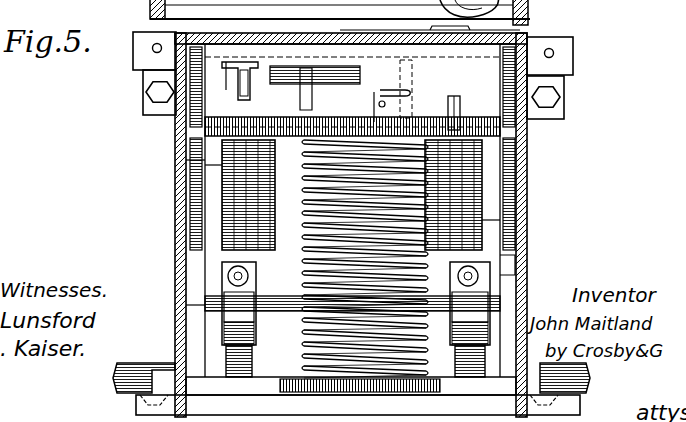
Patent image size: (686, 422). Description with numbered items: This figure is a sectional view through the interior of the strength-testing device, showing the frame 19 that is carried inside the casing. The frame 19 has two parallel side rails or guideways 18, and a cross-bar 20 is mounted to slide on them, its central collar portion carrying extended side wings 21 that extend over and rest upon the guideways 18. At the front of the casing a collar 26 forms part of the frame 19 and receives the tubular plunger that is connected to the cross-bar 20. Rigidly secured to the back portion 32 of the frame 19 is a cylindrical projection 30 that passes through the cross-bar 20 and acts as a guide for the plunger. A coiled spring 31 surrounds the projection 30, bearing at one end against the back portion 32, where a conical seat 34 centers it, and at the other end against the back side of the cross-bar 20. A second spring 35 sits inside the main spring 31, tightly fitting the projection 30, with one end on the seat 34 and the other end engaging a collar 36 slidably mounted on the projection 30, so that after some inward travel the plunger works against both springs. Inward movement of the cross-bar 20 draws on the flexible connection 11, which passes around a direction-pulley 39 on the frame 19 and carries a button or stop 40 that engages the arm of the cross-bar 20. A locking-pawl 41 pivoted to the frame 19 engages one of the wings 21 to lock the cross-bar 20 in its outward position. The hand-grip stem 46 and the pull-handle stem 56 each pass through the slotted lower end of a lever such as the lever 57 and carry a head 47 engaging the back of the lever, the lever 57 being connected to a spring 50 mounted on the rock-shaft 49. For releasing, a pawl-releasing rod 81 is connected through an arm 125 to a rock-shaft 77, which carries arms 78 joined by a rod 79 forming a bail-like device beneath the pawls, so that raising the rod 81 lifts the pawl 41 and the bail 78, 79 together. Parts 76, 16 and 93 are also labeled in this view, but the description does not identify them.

The collar 26 is at (522, 30).
The arms 78 is at (176, 88).
The rod 79 is at (281, 83).
The flexible connection 11 is at (213, 176).
The frame 19 is at (176, 58).
The bracket 76 is at (573, 46).
The nut bracket 16 is at (565, 80).
The direction-pulley 39 is at (196, 135).
The pawl-releasing rod 81 is at (522, 125).
The cross-bar 20 is at (352, 126).
The link 93 is at (421, 116).
The rock-shaft 77 is at (248, 84).
The arm 125 is at (430, 96).
The side rails or guideways 18 is at (206, 200).
The locking-pawl 41 is at (490, 183).
The side wings 21 is at (222, 146).
The button or stop 40 is at (200, 160).
The spring 50 is at (500, 220).
The stem 46 is at (515, 272).
The cylindrical projection 30 is at (312, 196).
The coiled spring 31 is at (404, 170).
The collar 36 is at (425, 224).
The second spring 35 is at (420, 250).
The rock-shaft 49 is at (265, 296).
The stem 56 is at (224, 270).
The head 47 is at (468, 368).
The lever 57 is at (205, 305).
The back portion 32 is at (300, 388).
The conical seat 34 is at (300, 376).